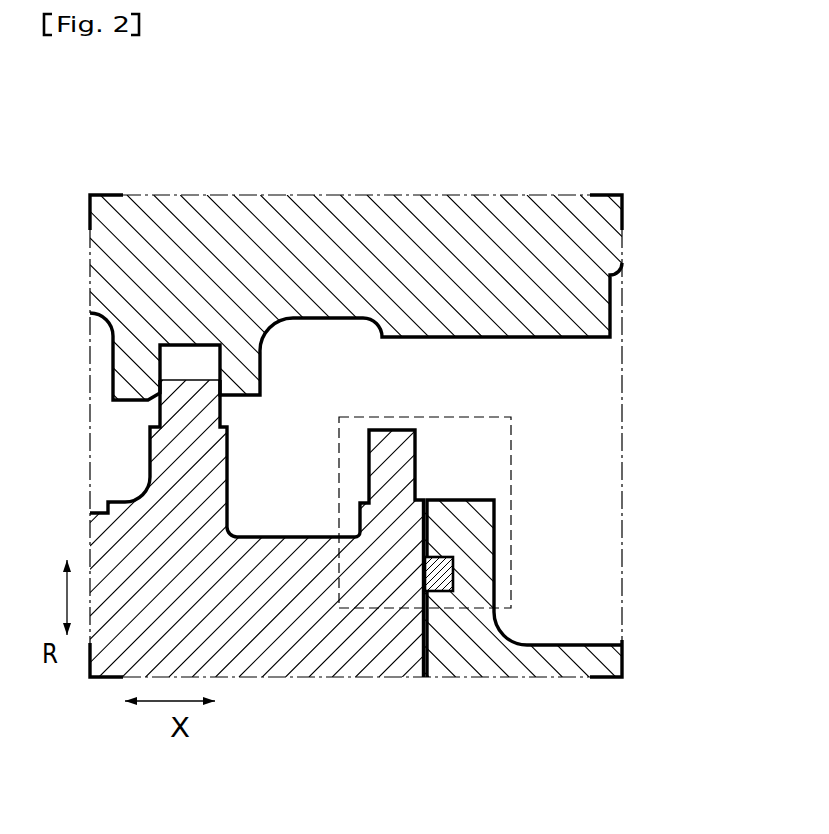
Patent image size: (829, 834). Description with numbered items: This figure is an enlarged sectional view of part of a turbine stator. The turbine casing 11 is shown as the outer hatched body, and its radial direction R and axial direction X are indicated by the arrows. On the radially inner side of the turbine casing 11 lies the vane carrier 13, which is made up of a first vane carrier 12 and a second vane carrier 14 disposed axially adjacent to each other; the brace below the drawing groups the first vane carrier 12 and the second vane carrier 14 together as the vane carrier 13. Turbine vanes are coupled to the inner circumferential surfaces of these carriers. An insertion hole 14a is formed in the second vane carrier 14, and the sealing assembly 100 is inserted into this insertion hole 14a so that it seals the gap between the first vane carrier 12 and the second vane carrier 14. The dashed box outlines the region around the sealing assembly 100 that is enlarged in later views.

The turbine casing 11 is at (346, 212).
The first vane carrier 12 is at (340, 665).
The vane carrier 13 is at (407, 598).
The second vane carrier 14 is at (575, 632).
The insertion hole 14a is at (446, 588).
The sealing assembly 100 is at (448, 562).